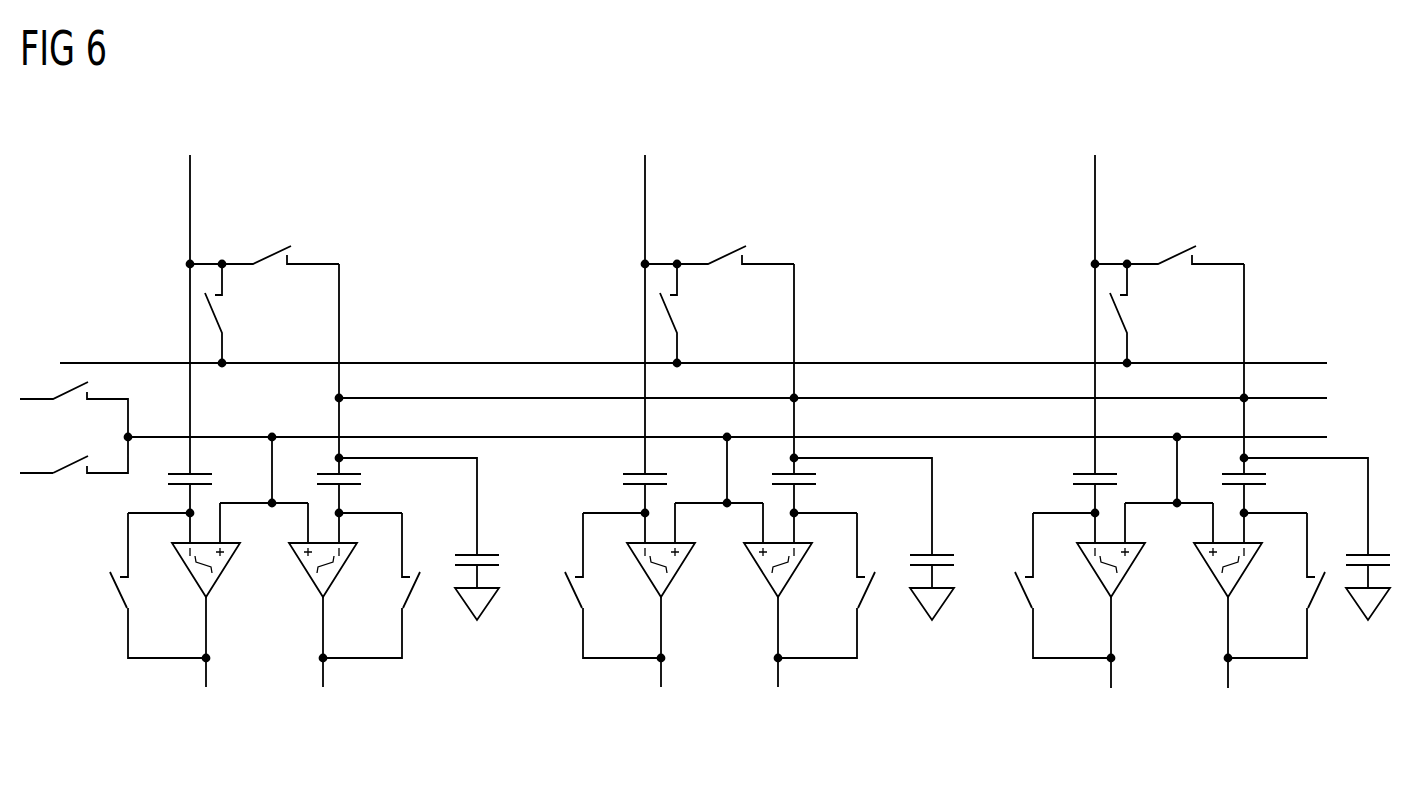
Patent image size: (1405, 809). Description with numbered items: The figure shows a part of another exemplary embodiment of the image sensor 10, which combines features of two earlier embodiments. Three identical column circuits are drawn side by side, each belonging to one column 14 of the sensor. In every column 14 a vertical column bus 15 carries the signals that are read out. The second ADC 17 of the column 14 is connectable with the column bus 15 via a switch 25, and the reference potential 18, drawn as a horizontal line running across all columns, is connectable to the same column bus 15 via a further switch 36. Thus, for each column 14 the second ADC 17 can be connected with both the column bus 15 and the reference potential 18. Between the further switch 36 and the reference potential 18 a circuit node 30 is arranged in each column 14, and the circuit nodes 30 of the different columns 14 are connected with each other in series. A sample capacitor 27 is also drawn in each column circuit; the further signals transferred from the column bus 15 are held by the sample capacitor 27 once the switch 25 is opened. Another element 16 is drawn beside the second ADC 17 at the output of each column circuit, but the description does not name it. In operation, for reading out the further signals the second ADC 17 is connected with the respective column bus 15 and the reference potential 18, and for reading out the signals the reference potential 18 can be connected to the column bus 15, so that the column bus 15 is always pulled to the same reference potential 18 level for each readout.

The image sensor 10 is at (1273, 143).
The column 14 is at (259, 165).
The column bus 15 is at (188, 206).
The first output 16 is at (206, 700).
The second ADC 17 is at (323, 700).
The reference potential 18 is at (100, 360).
The switch 25 is at (270, 250).
The sample capacitor 27 is at (881, 539).
The circuit node 30 is at (222, 366).
The further switch 36 is at (222, 308).